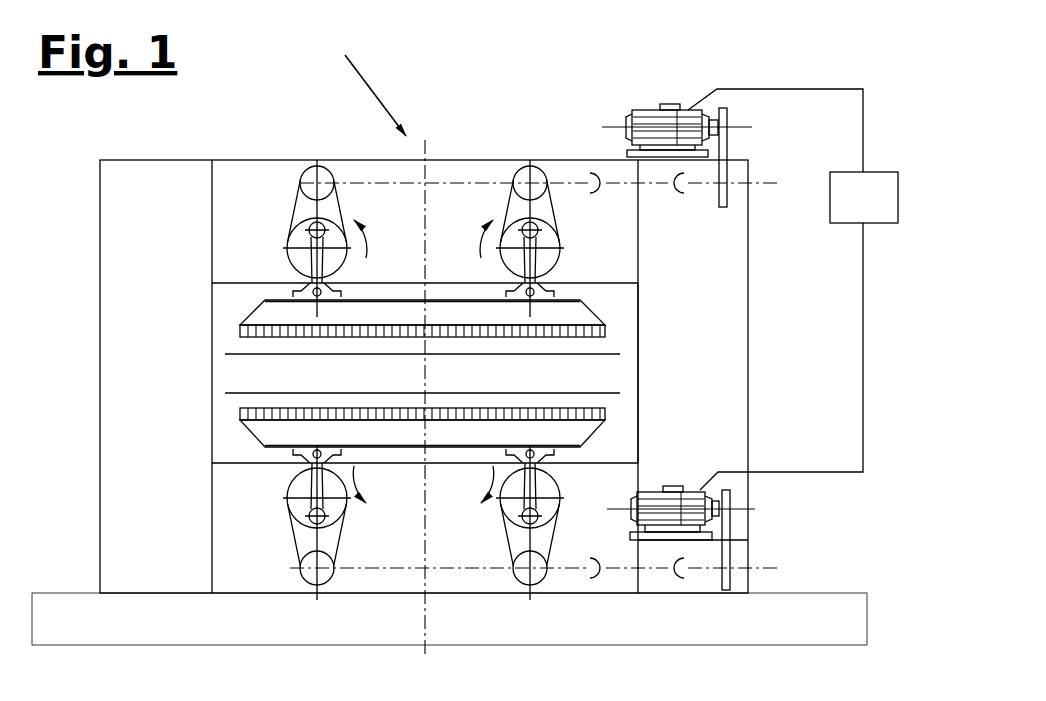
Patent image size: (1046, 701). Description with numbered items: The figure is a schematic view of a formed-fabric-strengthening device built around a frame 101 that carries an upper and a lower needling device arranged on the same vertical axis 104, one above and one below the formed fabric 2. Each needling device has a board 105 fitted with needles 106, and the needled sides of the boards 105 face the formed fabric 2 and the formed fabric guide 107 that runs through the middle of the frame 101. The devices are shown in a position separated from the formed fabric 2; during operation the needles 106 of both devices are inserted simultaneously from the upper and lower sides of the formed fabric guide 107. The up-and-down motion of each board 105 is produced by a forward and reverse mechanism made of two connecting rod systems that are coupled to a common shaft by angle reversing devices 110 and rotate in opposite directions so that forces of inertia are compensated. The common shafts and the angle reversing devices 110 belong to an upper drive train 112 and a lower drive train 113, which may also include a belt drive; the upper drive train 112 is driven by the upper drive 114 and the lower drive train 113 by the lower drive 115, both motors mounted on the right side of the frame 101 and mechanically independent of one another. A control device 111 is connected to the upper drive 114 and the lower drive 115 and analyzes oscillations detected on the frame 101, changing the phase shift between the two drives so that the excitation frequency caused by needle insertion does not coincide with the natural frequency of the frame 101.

The formed fabric 2 is at (595, 373).
The frame 101 is at (235, 185).
The vertical axis 104 is at (424, 152).
The board 105 is at (275, 310).
The needles 106 is at (240, 332).
The formed fabric guide 107 is at (675, 373).
The angle reversing devices 110 is at (328, 172).
The control device 111 is at (799, 331).
The upper drive train 112 is at (651, 192).
The lower drive train 113 is at (628, 570).
The upper drive 114 is at (688, 110).
The lower drive 115 is at (717, 520).